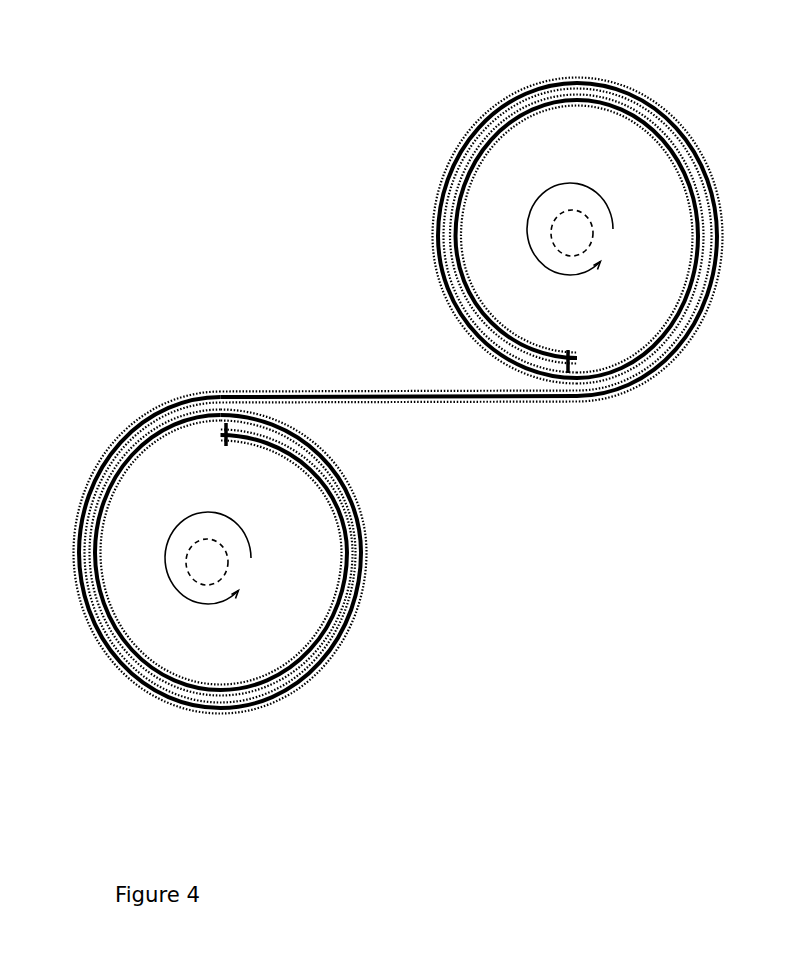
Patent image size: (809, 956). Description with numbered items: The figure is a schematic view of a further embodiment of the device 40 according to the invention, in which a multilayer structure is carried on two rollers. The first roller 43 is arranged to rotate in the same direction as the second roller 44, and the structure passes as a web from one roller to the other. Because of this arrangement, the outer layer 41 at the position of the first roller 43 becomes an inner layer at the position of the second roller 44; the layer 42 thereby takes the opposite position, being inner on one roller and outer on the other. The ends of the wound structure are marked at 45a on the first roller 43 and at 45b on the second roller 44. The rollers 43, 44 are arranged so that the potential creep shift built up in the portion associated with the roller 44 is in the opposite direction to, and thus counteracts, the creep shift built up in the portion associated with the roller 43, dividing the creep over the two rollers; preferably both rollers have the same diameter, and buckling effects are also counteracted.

The device 40 is at (312, 40).
The outer layer 41 is at (601, 103).
The film web 42 is at (692, 148).
The first roller 43 is at (232, 580).
The second roller 44 is at (592, 238).
The first end of film 45a is at (216, 431).
The second end of film 45b is at (575, 362).